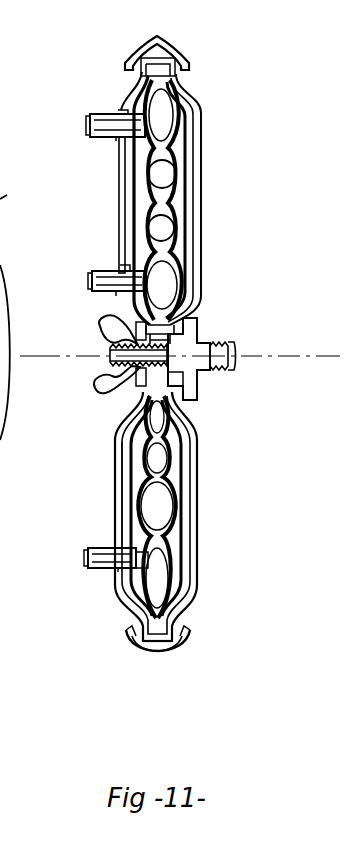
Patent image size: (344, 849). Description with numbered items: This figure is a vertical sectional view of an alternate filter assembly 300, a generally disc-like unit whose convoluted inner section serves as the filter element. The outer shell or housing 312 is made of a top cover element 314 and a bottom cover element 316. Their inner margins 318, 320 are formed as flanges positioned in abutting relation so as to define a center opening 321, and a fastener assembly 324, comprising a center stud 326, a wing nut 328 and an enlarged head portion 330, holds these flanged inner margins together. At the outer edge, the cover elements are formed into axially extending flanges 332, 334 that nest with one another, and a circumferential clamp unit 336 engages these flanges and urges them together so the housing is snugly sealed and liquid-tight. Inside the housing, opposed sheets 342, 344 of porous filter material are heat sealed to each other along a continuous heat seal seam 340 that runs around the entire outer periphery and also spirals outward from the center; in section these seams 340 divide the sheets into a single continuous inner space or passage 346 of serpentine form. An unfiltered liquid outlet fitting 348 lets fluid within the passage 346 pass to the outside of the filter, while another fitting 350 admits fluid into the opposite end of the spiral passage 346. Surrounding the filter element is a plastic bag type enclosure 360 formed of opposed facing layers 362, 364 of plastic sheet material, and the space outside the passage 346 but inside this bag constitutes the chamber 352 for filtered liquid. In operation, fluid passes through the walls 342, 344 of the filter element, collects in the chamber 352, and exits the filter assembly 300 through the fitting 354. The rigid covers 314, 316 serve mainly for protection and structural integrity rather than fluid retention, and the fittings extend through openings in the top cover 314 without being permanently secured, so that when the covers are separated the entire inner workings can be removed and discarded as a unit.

The filter assembly 300 is at (74, 61).
The outer shell or housing 312 is at (212, 496).
The top cover element 314 is at (118, 500).
The bottom cover element 316 is at (198, 434).
The inner margin 318 is at (95, 380).
The inner margin 320 is at (176, 346).
The center opening 321 is at (180, 340).
The fastener assembly 324 is at (240, 366).
The center stud 326 is at (106, 352).
The wing nut 328 is at (100, 322).
The enlarged head portion 330 is at (196, 380).
The axially extending flange 332 is at (146, 646).
The axially extending flange 334 is at (168, 650).
The circumferential clamp unit 336 is at (160, 658).
The heat seal seam 340 is at (136, 204).
The sheet of filter material 342 is at (121, 172).
The sheet of filter material 344 is at (186, 182).
The inner space or passage 346 is at (172, 233).
The unfiltered liquid outlet fitting 348 is at (109, 88).
The fitting 350 is at (92, 281).
The chamber 352 is at (176, 560).
The fitting 354 is at (100, 560).
The plastic bag type enclosure 360 is at (190, 252).
The plastic sheet layer 362 is at (118, 469).
The plastic sheet layer 364 is at (190, 134).